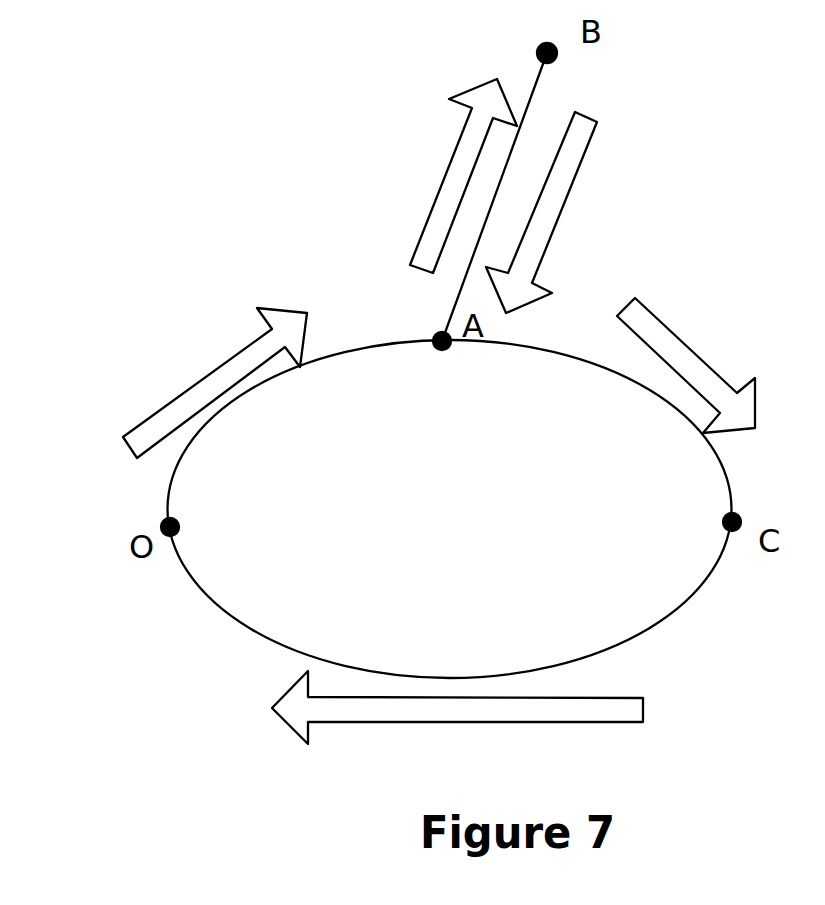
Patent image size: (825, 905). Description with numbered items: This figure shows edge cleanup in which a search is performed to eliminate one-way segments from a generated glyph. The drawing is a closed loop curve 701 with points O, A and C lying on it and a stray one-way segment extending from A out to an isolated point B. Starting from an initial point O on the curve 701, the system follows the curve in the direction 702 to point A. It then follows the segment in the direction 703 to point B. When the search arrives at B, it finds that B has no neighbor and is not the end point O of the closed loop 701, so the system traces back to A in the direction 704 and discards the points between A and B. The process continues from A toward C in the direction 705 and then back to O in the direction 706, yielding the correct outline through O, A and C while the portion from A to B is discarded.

The curve 701 is at (212, 605).
The direction 702 is at (185, 388).
The direction 703 is at (448, 167).
The direction 704 is at (575, 182).
The direction 705 is at (672, 330).
The direction 706 is at (325, 722).